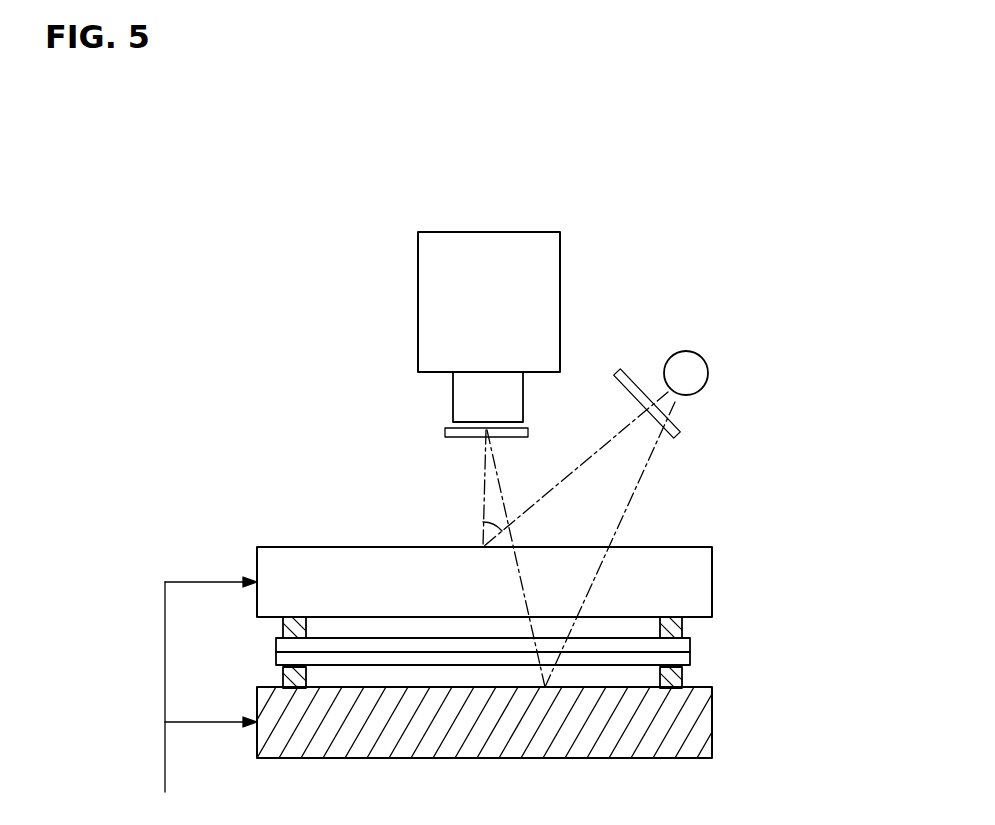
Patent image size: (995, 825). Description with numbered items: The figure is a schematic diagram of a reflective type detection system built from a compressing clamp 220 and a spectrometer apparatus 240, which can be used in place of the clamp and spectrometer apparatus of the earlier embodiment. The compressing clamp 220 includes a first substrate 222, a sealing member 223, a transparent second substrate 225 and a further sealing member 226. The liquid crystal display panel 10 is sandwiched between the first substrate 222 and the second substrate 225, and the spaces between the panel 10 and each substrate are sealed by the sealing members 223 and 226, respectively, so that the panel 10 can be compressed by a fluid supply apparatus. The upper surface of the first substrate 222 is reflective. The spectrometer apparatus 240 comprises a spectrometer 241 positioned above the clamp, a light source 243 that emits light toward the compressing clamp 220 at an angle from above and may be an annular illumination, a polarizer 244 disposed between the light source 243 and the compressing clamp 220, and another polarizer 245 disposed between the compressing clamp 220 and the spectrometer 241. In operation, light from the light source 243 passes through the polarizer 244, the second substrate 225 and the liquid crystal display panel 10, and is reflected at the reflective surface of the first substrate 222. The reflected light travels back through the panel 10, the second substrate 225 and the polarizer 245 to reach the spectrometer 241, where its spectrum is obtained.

The liquid crystal display panel 10 is at (690, 648).
The compressing clamp 220 is at (429, 604).
The first substrate 222 is at (712, 728).
The sealing member 223 is at (682, 678).
The second substrate 225 is at (323, 547).
The sealing member 226 is at (283, 628).
The spectrometer apparatus 240 is at (550, 401).
The spectrometer 241 is at (468, 232).
The light source 243 is at (708, 373).
The polarizer 244 is at (678, 436).
The polarizer 245 is at (445, 433).